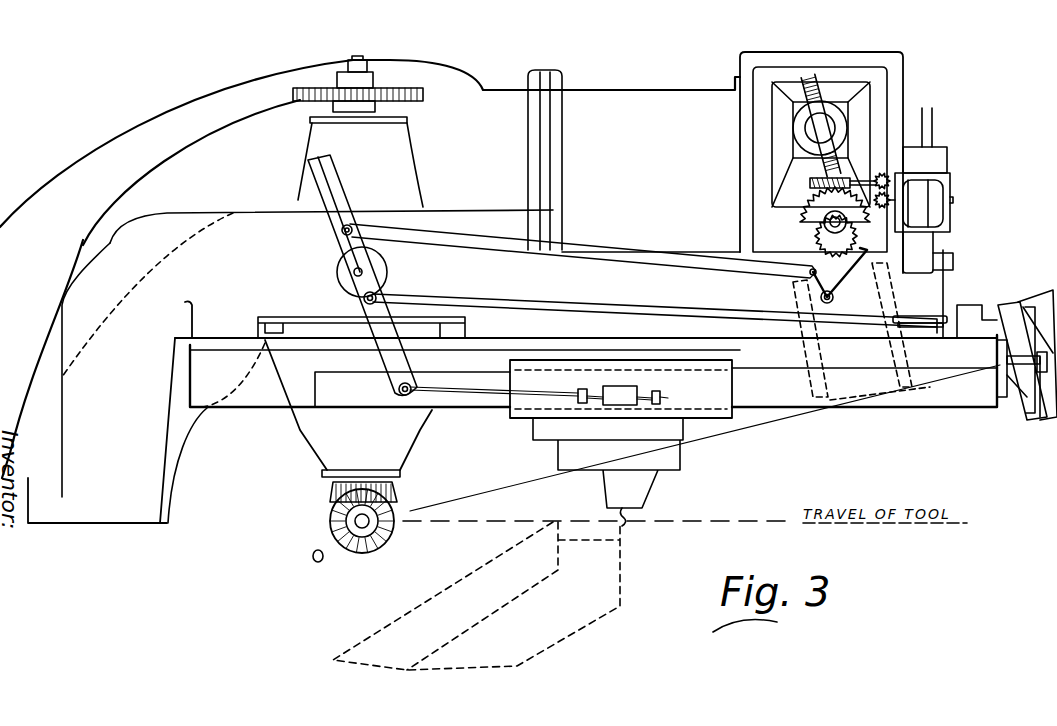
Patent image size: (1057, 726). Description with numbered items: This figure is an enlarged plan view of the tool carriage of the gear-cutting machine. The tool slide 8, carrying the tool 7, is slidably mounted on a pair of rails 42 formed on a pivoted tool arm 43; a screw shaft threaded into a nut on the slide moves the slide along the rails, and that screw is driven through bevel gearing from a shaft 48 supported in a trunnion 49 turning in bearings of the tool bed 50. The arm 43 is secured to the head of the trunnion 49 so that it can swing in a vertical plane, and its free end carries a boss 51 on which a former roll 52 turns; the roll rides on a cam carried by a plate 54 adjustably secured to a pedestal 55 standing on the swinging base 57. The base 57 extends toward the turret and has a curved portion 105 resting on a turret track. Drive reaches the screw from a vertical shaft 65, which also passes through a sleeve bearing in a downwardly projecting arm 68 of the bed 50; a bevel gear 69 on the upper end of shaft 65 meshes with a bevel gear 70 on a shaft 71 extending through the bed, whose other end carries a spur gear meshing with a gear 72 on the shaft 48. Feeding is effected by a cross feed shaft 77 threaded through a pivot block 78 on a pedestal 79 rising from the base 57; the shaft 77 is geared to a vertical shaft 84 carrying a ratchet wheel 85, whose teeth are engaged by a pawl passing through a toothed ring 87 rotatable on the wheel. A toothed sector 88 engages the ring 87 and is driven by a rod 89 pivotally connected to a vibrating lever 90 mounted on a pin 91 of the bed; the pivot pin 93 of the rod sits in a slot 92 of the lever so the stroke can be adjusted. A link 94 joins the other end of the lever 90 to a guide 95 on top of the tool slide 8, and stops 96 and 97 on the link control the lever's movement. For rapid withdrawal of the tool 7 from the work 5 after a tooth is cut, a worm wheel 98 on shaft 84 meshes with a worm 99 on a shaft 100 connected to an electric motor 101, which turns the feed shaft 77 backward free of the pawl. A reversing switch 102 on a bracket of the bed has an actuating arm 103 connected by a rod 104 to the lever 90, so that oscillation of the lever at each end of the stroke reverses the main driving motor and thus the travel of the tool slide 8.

The work piece 5 is at (563, 630).
The tool 7 is at (627, 522).
The tool slide 8 is at (733, 387).
The rails 42 is at (792, 400).
The tool arm 43 is at (245, 398).
The shaft 48 is at (357, 60).
The trunnion 49 is at (410, 178).
The tool bed 50 is at (122, 416).
The boss 51 is at (1013, 400).
The former roll 52 is at (1030, 427).
The plate 54 is at (1018, 330).
The pedestal 55 is at (1038, 298).
The swinging base 57 is at (770, 70).
The vertical shaft 65 is at (393, 550).
The downwardly projecting arm 68 is at (331, 492).
The bevel gear 69 is at (355, 523).
The bevel gear 70 is at (400, 497).
The shaft 71 is at (327, 485).
The gear 72 is at (293, 95).
The cross feed shaft 77 is at (818, 82).
The pivot block 78 is at (806, 127).
The pedestal 79 is at (865, 100).
The vertical shaft 84 is at (818, 236).
The ratchet wheel 85 is at (820, 227).
The toothed ring 87 is at (933, 245).
The toothed sector 88 is at (843, 290).
The driving rod 89 is at (565, 250).
The vibrating lever 90 is at (380, 273).
The pin 91 is at (354, 273).
The slot 92 is at (322, 177).
The pivot pin 93 is at (342, 231).
The link 94 is at (467, 392).
The guide 95 is at (626, 405).
The stop 96 is at (578, 394).
The stop 97 is at (656, 394).
The worm wheel 98 is at (807, 200).
The worm 99 is at (867, 177).
The shaft 100 is at (888, 175).
The electric motor 101 is at (942, 185).
The reversing switch 102 is at (925, 330).
The actuating arm 103 is at (945, 325).
The rod 104 is at (485, 305).
The curved portion 105 is at (163, 177).